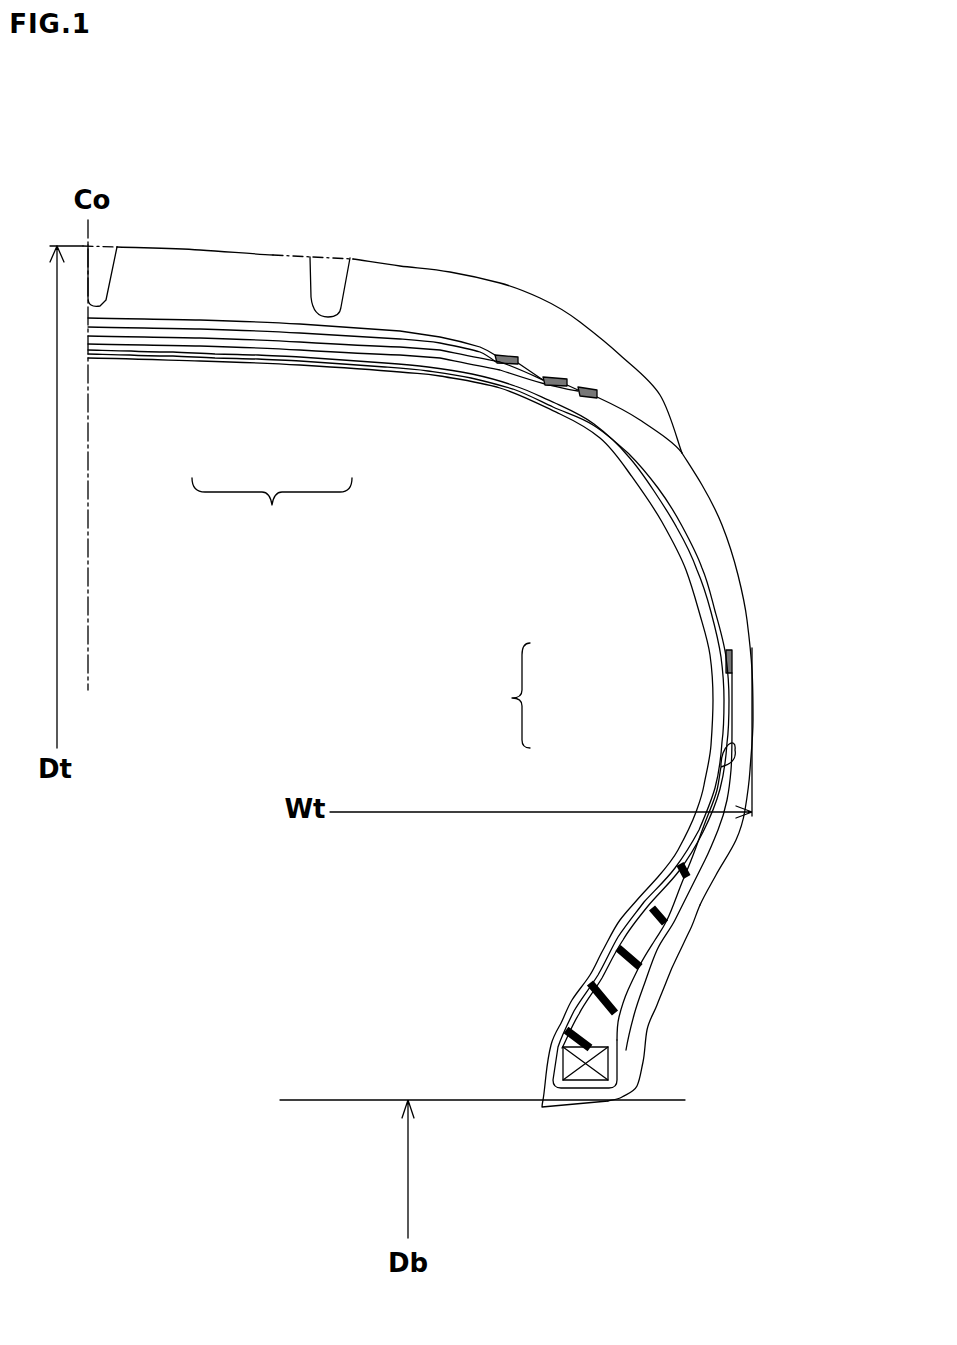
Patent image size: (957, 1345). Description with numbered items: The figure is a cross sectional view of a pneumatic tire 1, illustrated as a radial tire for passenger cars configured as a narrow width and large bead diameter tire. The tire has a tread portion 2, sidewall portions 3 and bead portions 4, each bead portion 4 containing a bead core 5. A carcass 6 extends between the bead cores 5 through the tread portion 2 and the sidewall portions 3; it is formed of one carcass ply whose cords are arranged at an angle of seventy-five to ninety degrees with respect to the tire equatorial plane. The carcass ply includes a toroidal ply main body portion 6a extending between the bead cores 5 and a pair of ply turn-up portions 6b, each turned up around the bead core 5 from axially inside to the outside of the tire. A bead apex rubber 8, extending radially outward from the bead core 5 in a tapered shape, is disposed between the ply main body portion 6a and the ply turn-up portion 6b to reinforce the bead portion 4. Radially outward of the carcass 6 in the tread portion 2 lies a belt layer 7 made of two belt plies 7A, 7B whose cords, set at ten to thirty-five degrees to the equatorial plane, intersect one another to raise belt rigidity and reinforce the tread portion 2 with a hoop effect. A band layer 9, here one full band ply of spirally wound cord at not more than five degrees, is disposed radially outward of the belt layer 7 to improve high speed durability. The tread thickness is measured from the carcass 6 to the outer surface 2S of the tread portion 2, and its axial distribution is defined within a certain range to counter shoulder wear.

The pneumatic tire 1 is at (712, 267).
The tread portion 2 is at (402, 285).
The outer surface of the tread portion 2S is at (273, 252).
The sidewall portion 3 is at (735, 489).
The bead portion 4 is at (522, 1002).
The bead core 5 is at (582, 1077).
The carcass 6 is at (480, 695).
The ply main body portion 6a is at (710, 587).
The ply turn-up portion 6b is at (700, 770).
The belt layer 7 is at (272, 510).
The belt ply 7A is at (348, 340).
The belt ply 7B is at (270, 330).
The bead apex rubber 8 is at (615, 975).
The band layer 9 is at (212, 322).